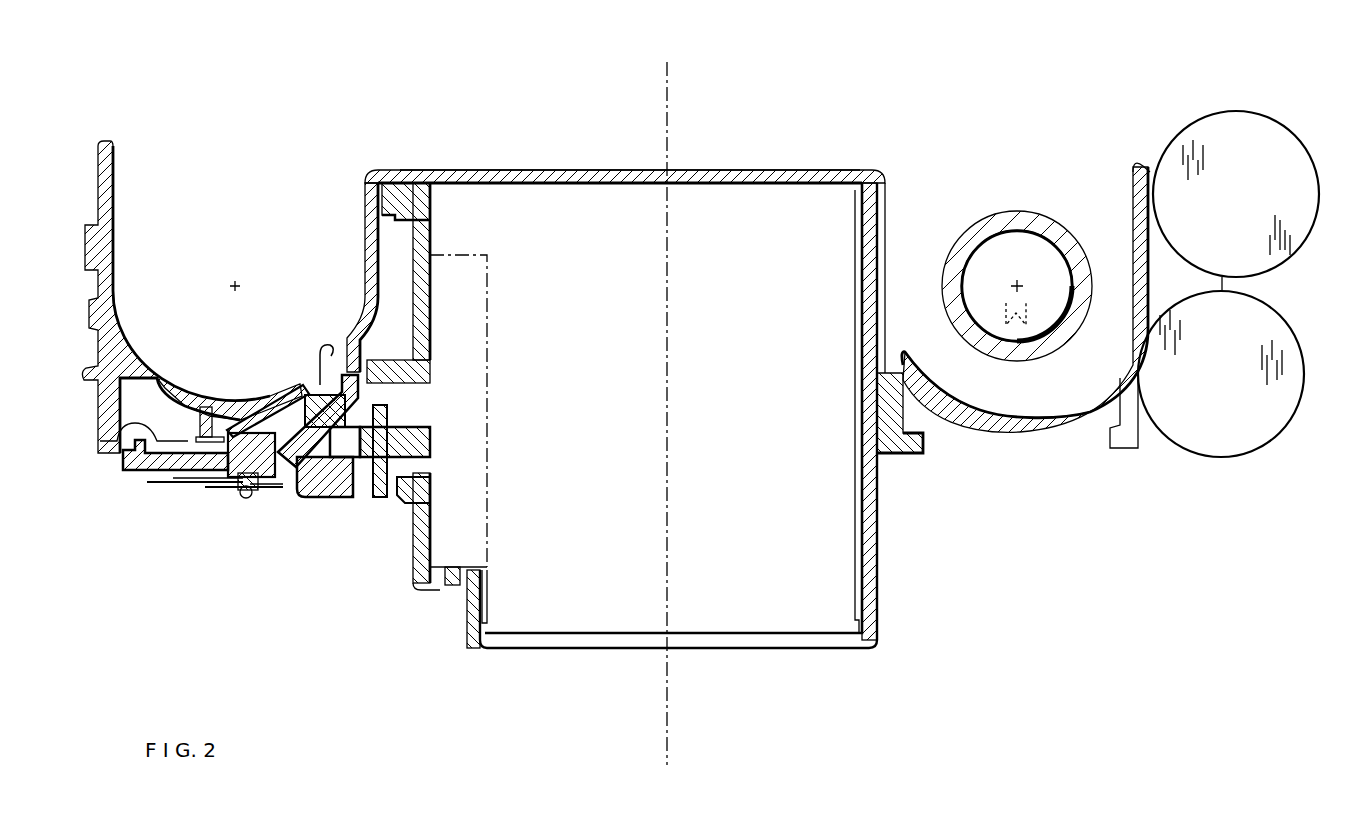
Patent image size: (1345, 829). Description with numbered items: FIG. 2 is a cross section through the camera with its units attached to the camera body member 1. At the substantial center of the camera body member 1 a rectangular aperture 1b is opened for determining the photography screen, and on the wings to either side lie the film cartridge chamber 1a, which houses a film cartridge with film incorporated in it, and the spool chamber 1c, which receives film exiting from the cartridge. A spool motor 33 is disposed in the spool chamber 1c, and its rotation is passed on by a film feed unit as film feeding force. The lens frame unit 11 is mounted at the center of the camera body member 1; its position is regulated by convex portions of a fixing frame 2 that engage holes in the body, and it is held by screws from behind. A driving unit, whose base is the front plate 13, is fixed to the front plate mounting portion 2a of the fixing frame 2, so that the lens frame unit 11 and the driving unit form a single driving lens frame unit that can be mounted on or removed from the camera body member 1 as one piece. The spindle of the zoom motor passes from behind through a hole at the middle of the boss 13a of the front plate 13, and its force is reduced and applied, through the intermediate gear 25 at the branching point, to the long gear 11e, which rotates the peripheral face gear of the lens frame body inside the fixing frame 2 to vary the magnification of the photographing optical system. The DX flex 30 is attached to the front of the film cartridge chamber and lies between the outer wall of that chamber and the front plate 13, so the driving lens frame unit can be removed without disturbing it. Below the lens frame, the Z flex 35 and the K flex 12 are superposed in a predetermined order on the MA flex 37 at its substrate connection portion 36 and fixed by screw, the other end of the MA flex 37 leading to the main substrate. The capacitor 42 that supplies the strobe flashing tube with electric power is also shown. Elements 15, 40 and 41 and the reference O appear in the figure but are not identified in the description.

The camera body member 1 is at (358, 172).
The film cartridge chamber 1a is at (208, 223).
The rectangular aperture 1b is at (722, 170).
The spool chamber 1c is at (1020, 183).
The fixing frame 2 is at (878, 642).
The front plate mounting portion 2a is at (913, 456).
The lens frame unit 11 is at (612, 605).
The long gear 11e is at (455, 255).
The K flex 12 is at (183, 480).
The front plate 13 is at (130, 471).
The boss 13a is at (240, 420).
The support member 15 is at (333, 499).
The intermediate gear 25 is at (428, 436).
The DX flex 30 is at (104, 438).
The spool motor 33 is at (1011, 328).
The Z flex 35 is at (180, 486).
The substrate connection portion 36 is at (246, 499).
The MA flex 37 is at (215, 489).
The drive roller 40 is at (1050, 214).
The upper roller 41 is at (1253, 130).
The capacitor 42 is at (1258, 432).
The optical axis O is at (667, 733).